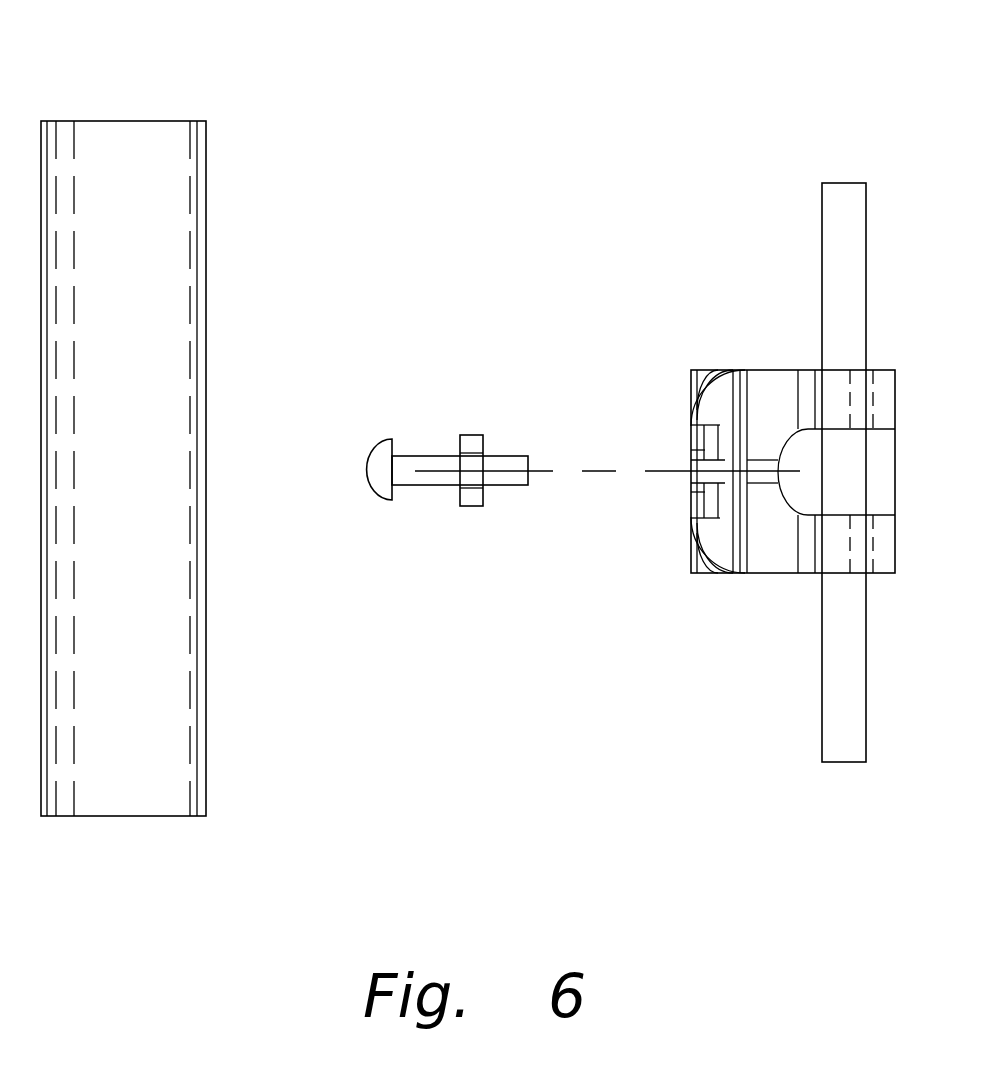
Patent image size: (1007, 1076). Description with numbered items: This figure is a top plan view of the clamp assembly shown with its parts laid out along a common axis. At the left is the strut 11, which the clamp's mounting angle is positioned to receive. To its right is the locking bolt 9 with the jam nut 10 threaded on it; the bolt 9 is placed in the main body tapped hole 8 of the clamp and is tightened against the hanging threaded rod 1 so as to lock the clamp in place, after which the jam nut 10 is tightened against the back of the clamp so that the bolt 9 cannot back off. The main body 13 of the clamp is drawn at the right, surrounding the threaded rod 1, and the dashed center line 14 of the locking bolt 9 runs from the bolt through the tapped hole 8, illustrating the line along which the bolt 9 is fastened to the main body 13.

The threaded rod 1 is at (806, 209).
The main body tapped hole 8 is at (681, 485).
The locking bolt 9 is at (506, 496).
The jam nut 10 is at (457, 423).
The strut 11 is at (208, 149).
The main body 13 is at (707, 586).
The center line 14 is at (589, 460).